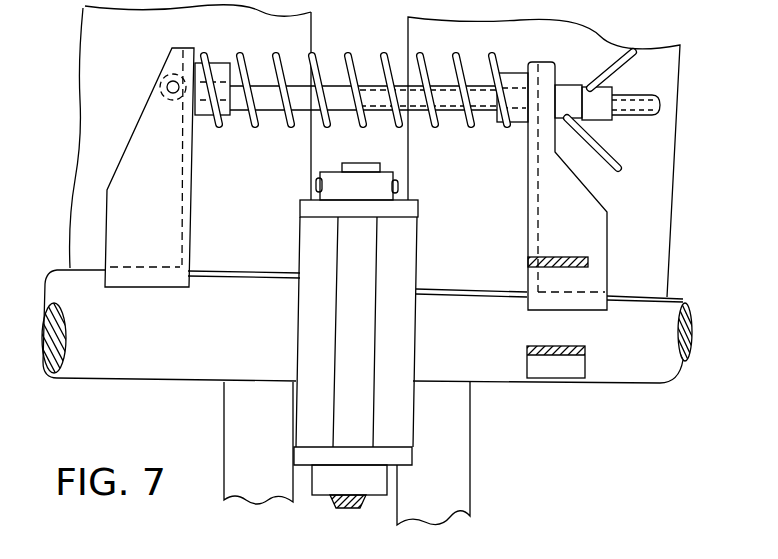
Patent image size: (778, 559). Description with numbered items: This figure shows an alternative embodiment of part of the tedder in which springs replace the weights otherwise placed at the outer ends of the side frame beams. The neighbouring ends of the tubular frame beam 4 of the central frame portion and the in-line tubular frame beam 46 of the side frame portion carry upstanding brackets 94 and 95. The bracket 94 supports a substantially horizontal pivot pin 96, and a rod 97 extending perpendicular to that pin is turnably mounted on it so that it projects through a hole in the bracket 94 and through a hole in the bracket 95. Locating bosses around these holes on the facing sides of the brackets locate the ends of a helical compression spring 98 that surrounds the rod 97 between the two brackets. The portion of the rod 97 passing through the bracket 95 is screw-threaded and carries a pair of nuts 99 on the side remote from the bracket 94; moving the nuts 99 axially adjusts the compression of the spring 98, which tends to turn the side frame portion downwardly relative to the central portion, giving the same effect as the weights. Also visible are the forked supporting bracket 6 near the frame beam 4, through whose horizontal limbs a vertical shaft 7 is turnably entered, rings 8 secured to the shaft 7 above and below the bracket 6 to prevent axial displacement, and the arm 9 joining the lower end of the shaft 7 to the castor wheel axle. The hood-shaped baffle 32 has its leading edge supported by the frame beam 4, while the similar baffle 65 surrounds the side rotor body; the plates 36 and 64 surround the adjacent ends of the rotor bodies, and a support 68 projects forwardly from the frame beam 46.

The frame beam 4 is at (102, 378).
The forked supporting bracket 6 is at (416, 243).
The vertical shaft 7 is at (343, 300).
The rings 8 is at (335, 172).
The arms 9 is at (357, 500).
The hood-shaped baffle 32 is at (98, 6).
The plate 36 is at (238, 502).
The tubular frame beam 46 is at (620, 383).
The plate 64 is at (468, 450).
The hood-shaped baffle 65 is at (430, 13).
The support 68 is at (562, 316).
The upstanding bracket 94 is at (133, 137).
The upstanding bracket 95 is at (605, 226).
The pivot pin 96 is at (163, 87).
The rod 97 is at (253, 77).
The helical compression spring 98 is at (354, 66).
The nuts 99 is at (586, 90).